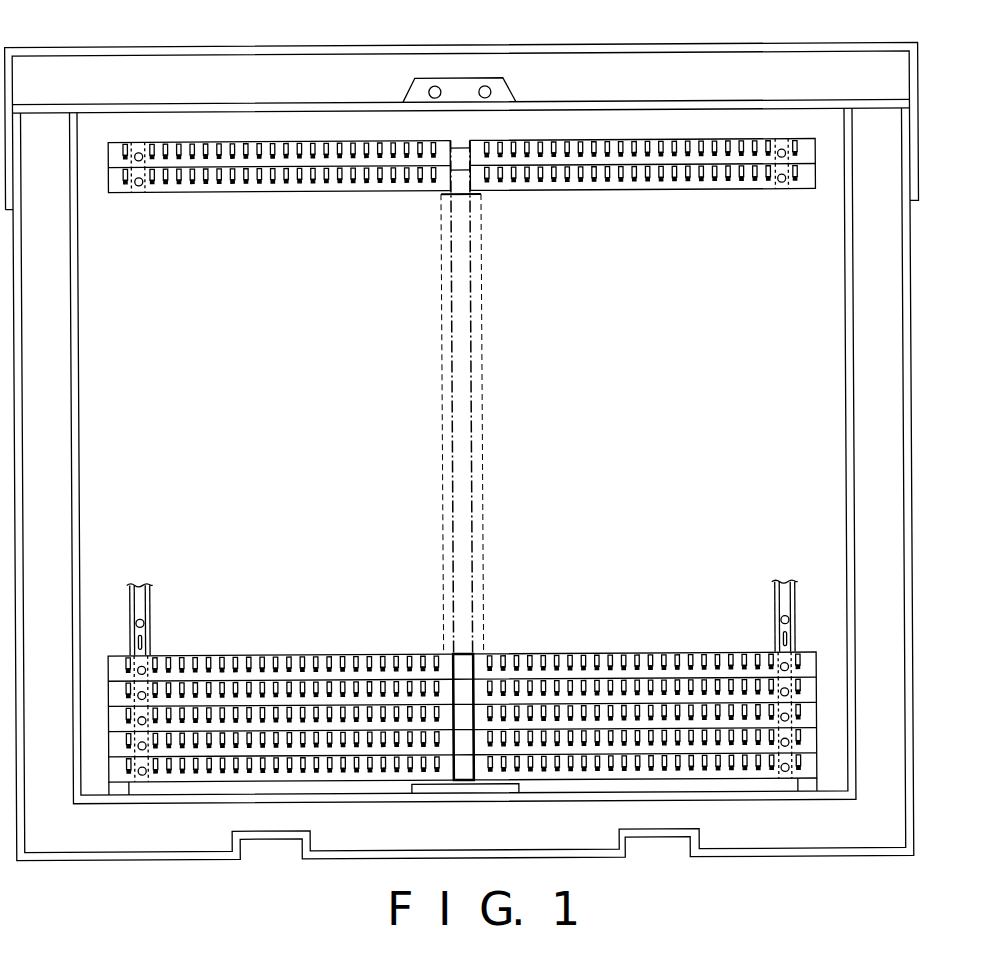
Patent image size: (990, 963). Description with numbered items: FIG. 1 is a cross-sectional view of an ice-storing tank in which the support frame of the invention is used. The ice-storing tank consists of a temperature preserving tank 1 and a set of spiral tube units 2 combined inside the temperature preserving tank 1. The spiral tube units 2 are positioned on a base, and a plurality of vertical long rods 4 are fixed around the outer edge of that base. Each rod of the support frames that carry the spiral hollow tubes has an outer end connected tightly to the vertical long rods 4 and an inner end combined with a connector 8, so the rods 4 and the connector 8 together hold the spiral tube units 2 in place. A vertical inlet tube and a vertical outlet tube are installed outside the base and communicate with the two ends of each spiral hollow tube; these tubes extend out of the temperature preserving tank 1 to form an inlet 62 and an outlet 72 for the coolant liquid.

The temperature preserving tank 1 is at (918, 318).
The spiral tube units 2 is at (600, 138).
The vertical long rods 4 is at (798, 603).
The connector 8 is at (462, 660).
The inlet 62 is at (437, 86).
The outlet 72 is at (487, 86).